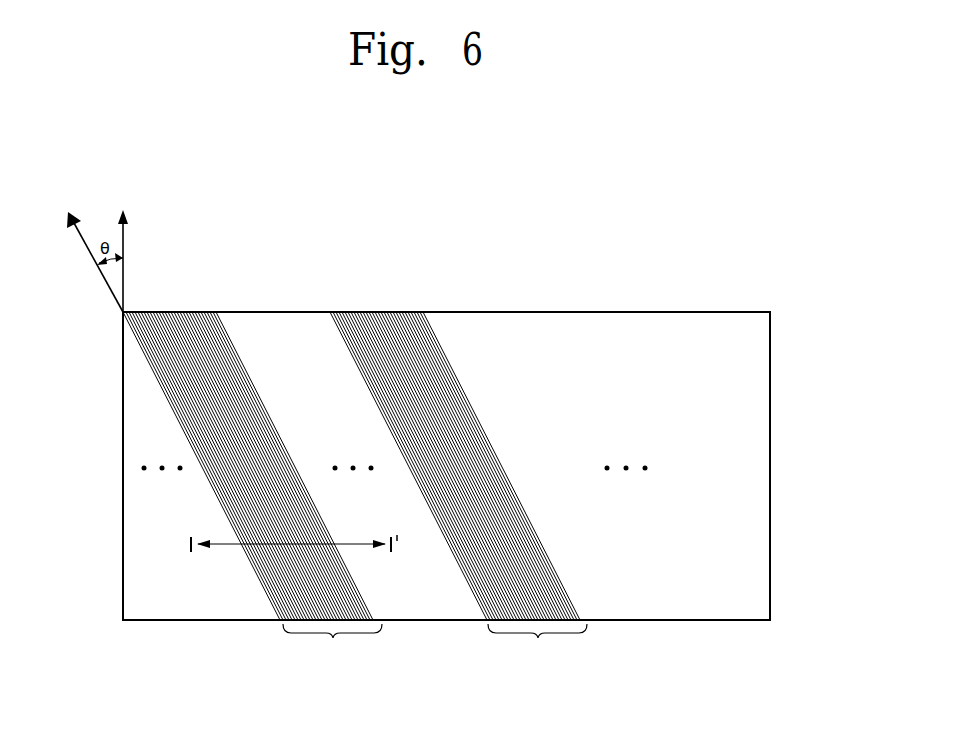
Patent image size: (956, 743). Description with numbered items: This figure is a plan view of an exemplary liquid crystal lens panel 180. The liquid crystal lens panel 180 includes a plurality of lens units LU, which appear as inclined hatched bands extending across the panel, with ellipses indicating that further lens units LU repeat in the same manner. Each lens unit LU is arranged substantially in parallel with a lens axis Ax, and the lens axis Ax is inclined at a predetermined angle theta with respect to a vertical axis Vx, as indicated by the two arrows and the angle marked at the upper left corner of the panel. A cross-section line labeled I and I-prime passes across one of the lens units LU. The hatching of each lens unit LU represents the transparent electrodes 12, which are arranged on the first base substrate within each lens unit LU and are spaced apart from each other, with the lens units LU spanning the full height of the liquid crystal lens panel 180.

The transparent electrodes 12 is at (153, 370).
The liquid crystal lens panel 180 is at (770, 388).
The lens unit LU is at (435, 647).
The lens axis Ax is at (88, 250).
The vertical axis Vx is at (121, 250).